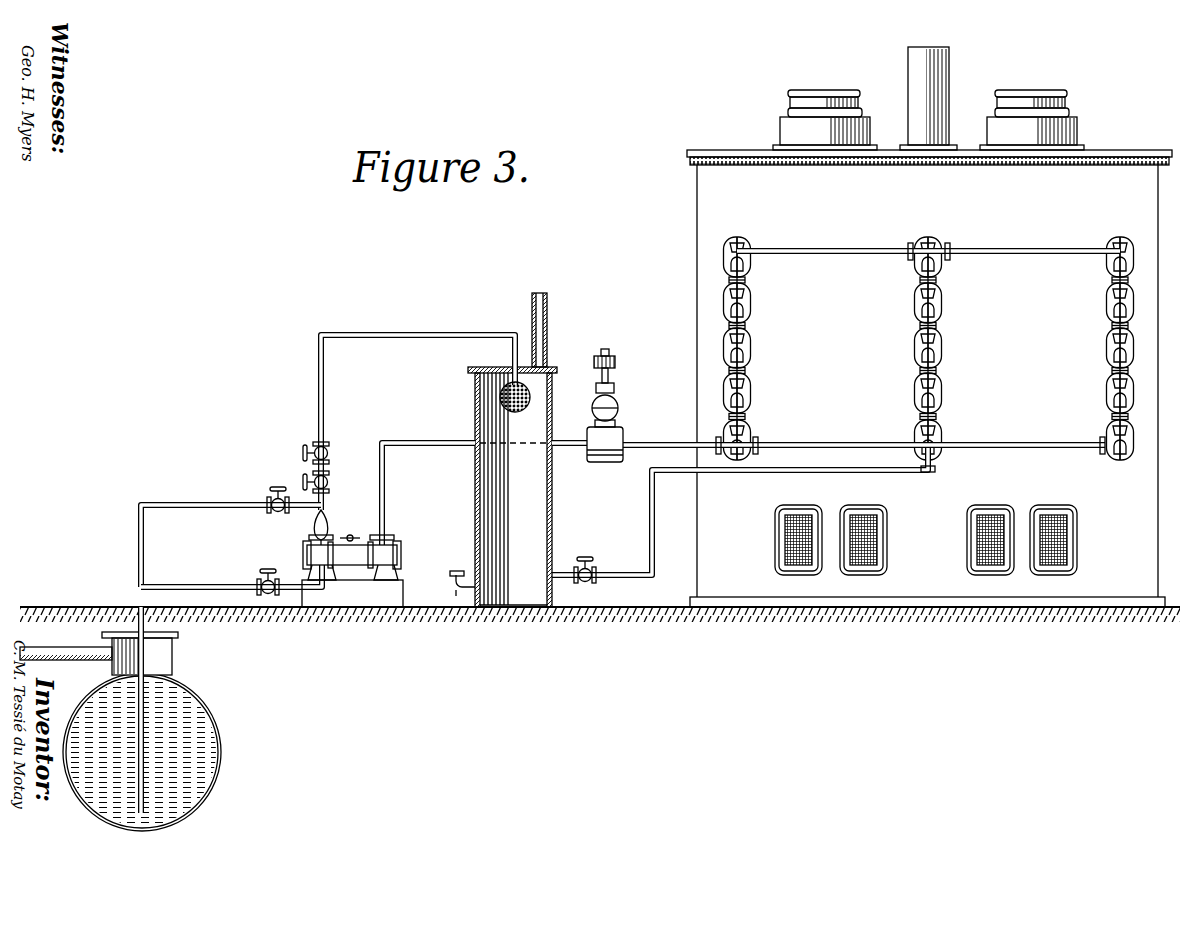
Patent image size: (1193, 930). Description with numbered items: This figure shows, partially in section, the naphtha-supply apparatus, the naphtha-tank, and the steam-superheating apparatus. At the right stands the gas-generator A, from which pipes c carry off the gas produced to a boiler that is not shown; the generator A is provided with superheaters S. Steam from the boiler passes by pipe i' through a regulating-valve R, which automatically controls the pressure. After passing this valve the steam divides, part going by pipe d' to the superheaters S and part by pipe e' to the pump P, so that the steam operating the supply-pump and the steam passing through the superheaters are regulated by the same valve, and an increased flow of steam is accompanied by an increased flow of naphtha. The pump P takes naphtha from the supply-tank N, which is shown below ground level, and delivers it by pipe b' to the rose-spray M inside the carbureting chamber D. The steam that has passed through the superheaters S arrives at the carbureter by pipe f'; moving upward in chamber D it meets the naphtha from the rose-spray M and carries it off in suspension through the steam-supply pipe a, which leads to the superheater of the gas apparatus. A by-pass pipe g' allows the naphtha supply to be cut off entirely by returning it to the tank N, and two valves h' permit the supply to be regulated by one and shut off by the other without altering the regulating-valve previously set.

The gas-generator A is at (929, 348).
The pipes c is at (932, 98).
The superheaters S is at (937, 348).
The steam-supply pipe a is at (548, 328).
The pipe b' is at (418, 410).
The pipe e' is at (478, 482).
The valves h' is at (330, 465).
The by-pass pipe g' is at (231, 534).
The pump P is at (308, 558).
The rose-spray M is at (521, 404).
The carbureting apparatus chamber D is at (512, 487).
The pipe i' is at (596, 385).
The regulating-valve R is at (615, 437).
The pipe d' is at (864, 437).
The pipe f' is at (743, 515).
The supply-tank N is at (136, 719).